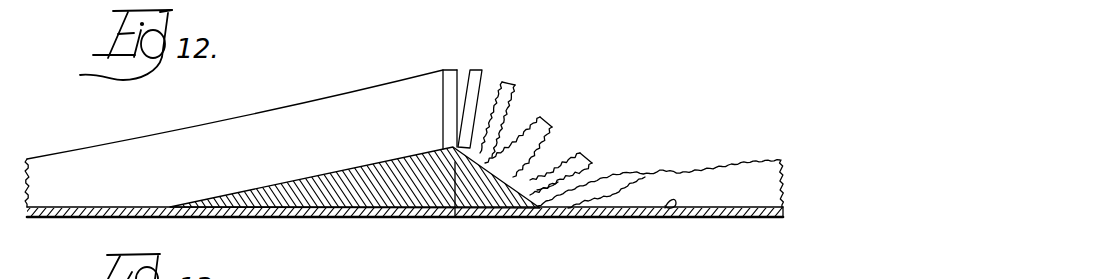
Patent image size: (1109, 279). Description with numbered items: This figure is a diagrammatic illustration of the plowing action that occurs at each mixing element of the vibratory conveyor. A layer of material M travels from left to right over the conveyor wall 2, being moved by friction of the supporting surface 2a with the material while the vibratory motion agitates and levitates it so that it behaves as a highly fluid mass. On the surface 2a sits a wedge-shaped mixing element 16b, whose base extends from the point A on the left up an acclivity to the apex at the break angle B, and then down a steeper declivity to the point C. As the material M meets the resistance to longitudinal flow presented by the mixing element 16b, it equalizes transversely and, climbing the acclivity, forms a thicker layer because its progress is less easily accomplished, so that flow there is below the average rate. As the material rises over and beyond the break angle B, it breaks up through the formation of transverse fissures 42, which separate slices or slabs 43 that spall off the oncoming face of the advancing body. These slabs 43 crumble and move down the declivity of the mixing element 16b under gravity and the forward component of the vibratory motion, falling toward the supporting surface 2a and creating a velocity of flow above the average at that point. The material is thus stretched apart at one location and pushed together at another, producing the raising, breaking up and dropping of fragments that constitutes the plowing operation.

The material M is at (66, 162).
The conveyor wall 2 is at (713, 213).
The supporting surface 2a is at (665, 208).
The mixing element 16b is at (408, 173).
The transverse fissures 42 is at (493, 80).
The slices or slabs 43 is at (515, 85).
The point A is at (270, 198).
The break angle B is at (455, 217).
The point C is at (518, 207).